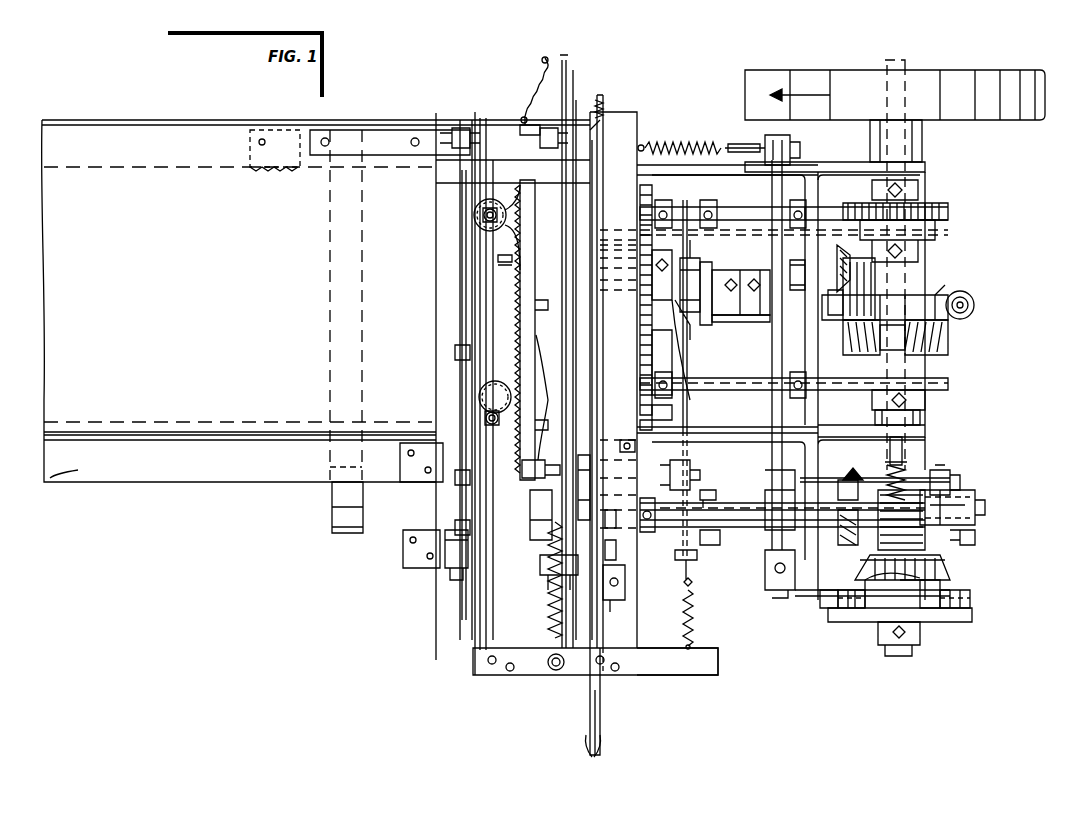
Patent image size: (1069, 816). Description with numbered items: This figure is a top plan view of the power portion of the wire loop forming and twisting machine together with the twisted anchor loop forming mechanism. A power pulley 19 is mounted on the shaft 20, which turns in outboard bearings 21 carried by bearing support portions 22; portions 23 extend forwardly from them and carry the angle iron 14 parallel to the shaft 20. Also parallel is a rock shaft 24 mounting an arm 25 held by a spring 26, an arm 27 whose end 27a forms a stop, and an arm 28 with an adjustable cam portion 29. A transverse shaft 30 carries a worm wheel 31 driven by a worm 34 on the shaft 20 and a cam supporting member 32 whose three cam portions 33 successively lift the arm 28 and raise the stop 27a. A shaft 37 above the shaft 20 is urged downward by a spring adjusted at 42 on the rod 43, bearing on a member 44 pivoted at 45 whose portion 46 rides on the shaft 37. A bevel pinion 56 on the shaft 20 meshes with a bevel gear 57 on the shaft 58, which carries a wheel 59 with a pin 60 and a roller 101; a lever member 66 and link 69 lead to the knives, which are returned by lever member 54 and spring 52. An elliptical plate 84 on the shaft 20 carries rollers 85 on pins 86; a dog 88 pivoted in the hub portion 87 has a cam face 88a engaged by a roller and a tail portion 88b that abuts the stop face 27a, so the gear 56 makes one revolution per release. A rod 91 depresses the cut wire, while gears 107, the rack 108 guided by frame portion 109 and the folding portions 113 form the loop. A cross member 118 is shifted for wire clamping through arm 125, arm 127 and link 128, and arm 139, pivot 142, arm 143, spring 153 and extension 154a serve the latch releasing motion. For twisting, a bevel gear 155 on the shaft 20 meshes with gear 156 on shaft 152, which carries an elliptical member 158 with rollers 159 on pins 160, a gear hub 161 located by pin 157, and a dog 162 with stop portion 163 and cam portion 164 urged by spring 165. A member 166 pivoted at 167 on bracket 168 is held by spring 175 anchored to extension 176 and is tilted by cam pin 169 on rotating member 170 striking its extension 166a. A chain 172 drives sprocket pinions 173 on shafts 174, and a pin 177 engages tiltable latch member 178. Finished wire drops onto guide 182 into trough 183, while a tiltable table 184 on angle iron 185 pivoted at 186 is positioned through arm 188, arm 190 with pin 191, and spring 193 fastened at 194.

The angle iron extension 14 is at (620, 110).
The power pulley 19 is at (810, 70).
The shaft 20 is at (893, 62).
The outboard bearings 21 is at (924, 146).
The outboard bearing support portions 22 is at (836, 162).
The portions 23 is at (697, 162).
The rock shaft 24 is at (778, 206).
The arm 25 is at (765, 140).
The spring 26 is at (670, 146).
The arm 27 is at (818, 597).
The stop end 27a is at (927, 600).
The arm 28 is at (836, 482).
The adjustable cam portion 29 is at (952, 480).
The shaft 30 is at (755, 530).
The worm wheel 31 is at (908, 482).
The cam supporting member 32 is at (978, 505).
The cam portions 33 is at (958, 542).
The worm 34 is at (906, 540).
The shaft 37 is at (912, 268).
The tension adjustment 42 is at (972, 302).
The rod 43 is at (970, 312).
The member 44 is at (950, 320).
The pivot 45 is at (836, 330).
The portion 46 is at (952, 282).
The spring 52 is at (602, 95).
The lever member 54 is at (598, 125).
The bevel pinion 56 is at (952, 572).
The bevel gear 57 is at (792, 566).
The shaft 58 is at (740, 527).
The wheel 59 is at (590, 496).
The pin 60 is at (603, 521).
The lever member 66 is at (588, 725).
The link 69 is at (600, 702).
The elliptical plate 84 is at (870, 624).
The rollers 85 is at (840, 608).
The pins 86 is at (855, 610).
The hub portion 87 is at (880, 628).
The dog 88 is at (918, 648).
The cam face 88a is at (945, 610).
The tail portion 88b is at (812, 635).
The rod 91 is at (483, 214).
The roller 101 is at (522, 480).
The gears 107 is at (480, 205).
The rack 108 is at (520, 272).
The frame portion 109 is at (550, 182).
The folding portions 113 is at (498, 262).
The cross member 118 is at (462, 308).
The arm 125 is at (615, 602).
The arm 127 is at (468, 560).
The link 128 is at (458, 386).
The arm 139 is at (560, 540).
The pivot 142 is at (553, 608).
The arm 143 is at (575, 110).
The shaft 152 is at (792, 262).
The spring 153 is at (545, 555).
The extension 154a is at (557, 672).
The bevel gear 155 is at (947, 342).
The bevel gear 156 is at (838, 242).
The locating pin 157 is at (660, 302).
The elliptical member 158 is at (722, 323).
The rollers 159 is at (722, 272).
The pins 160 is at (738, 282).
The gear hub 161 is at (648, 345).
The dog 162 is at (698, 262).
The stop portion 163 is at (688, 310).
The cam portion 164 is at (708, 268).
The spring 165 is at (690, 340).
The member 166 is at (665, 408).
The extension 166a is at (680, 548).
The pivot 167 is at (692, 470).
The frame bracket member 168 is at (683, 480).
The cam pin 169 is at (684, 578).
The rotating member 170 is at (706, 547).
The chain 172 is at (640, 269).
The sprocket pinions 173 is at (642, 185).
The shaft 174 is at (680, 208).
The spring 175 is at (684, 627).
The extension 176 is at (680, 676).
The pin 177 is at (640, 248).
The tiltable latch member 178 is at (640, 235).
The guide 182 is at (328, 320).
The trough 183 is at (335, 497).
The table structure 184 is at (240, 414).
The angle iron 185 is at (193, 118).
The pivot 186 is at (290, 170).
The arm 188 is at (564, 55).
The arm 190 is at (545, 57).
The pin 191 is at (545, 132).
The tension spring 193 is at (533, 88).
The fastening 194 is at (520, 112).